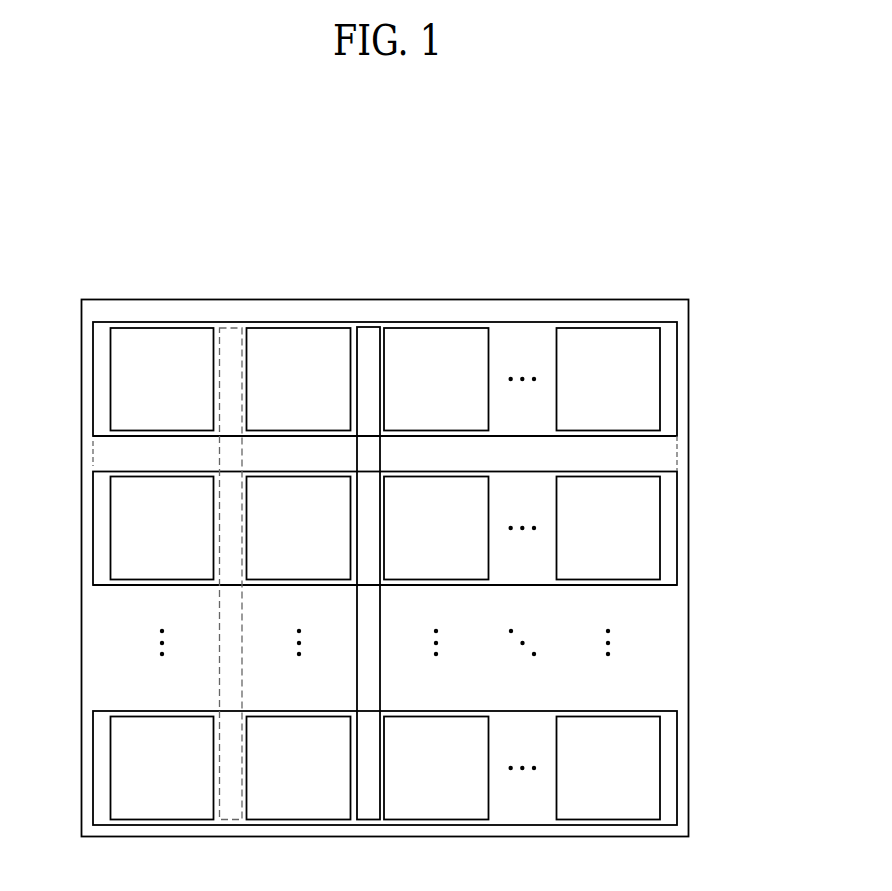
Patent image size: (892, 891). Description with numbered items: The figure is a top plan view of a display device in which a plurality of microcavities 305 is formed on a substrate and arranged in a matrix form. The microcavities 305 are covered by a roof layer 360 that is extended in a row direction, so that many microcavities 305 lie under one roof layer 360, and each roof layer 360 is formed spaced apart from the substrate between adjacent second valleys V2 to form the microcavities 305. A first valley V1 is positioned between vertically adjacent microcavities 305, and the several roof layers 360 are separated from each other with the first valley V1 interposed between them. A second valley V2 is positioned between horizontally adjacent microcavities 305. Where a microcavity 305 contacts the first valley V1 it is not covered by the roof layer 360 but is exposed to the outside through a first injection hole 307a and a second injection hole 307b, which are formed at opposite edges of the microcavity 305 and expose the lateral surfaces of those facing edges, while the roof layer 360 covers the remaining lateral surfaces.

The microcavity 305 is at (110, 354).
The roof layer 360 is at (93, 399).
The first injection hole 307a is at (635, 471).
The second injection hole 307b is at (642, 436).
The first valley V1 is at (93, 453).
The second valley V2 is at (231, 328).